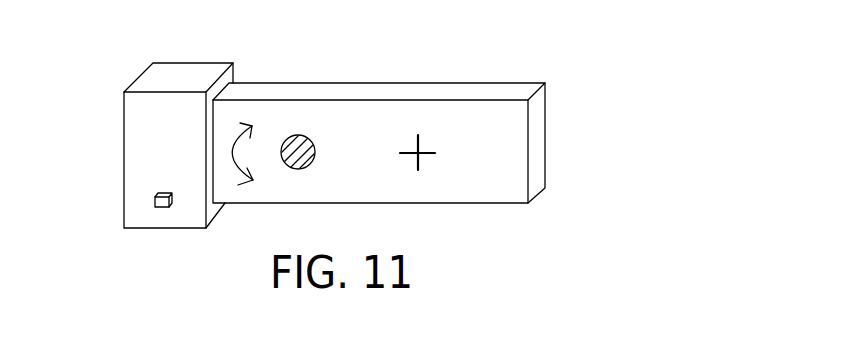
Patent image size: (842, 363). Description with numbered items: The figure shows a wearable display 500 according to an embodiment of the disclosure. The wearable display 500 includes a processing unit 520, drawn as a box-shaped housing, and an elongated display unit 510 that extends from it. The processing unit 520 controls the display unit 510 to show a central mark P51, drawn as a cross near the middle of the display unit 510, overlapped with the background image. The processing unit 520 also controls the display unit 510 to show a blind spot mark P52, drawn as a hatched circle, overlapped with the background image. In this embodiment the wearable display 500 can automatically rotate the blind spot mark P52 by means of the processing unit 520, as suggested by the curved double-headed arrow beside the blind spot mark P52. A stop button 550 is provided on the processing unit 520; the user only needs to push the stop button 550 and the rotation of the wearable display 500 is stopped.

The wearable display 500 is at (400, 153).
The display unit 510 is at (543, 133).
The processing unit 520 is at (123, 160).
The stop button 550 is at (163, 207).
The central mark P51 is at (408, 152).
The blind spot mark P52 is at (297, 135).